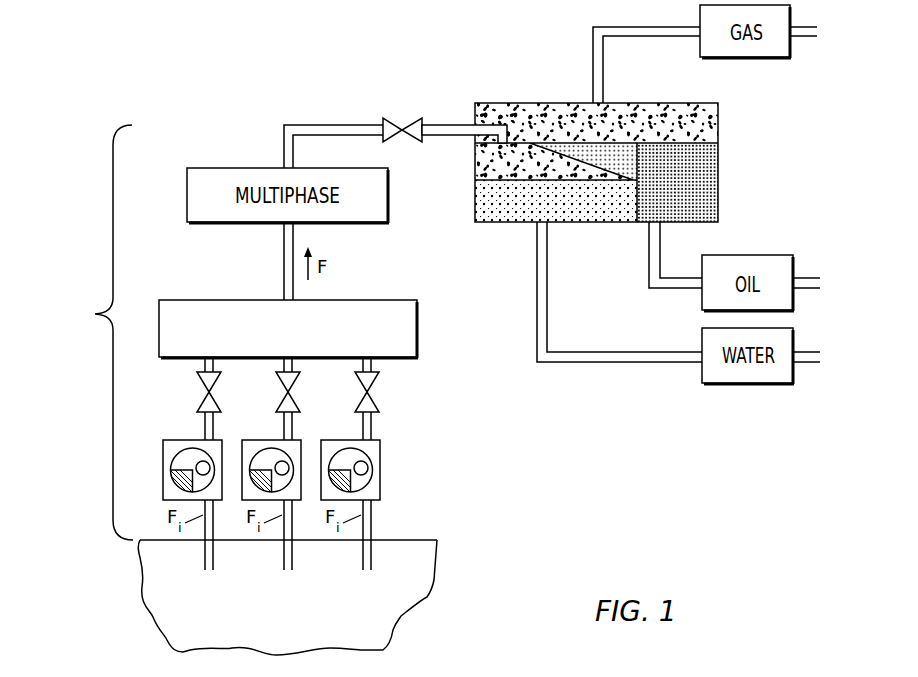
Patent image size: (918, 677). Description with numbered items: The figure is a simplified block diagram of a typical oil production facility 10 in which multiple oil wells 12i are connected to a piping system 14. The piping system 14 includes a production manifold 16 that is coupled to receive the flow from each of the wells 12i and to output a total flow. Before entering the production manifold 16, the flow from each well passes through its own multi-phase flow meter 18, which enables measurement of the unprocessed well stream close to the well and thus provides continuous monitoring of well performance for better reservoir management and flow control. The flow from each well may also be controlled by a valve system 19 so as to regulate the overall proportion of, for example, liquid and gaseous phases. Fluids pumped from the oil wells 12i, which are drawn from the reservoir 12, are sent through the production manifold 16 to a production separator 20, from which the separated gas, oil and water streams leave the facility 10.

The oil production facility 10 is at (335, 76).
The subterranean reservoir 12 is at (433, 585).
The oil wells 12i is at (361, 555).
The piping system 14 is at (92, 313).
The production manifold 16 is at (373, 300).
The multi-phase flow meter 18 is at (380, 456).
The valve system 19 is at (381, 388).
The production separator 20 is at (720, 159).